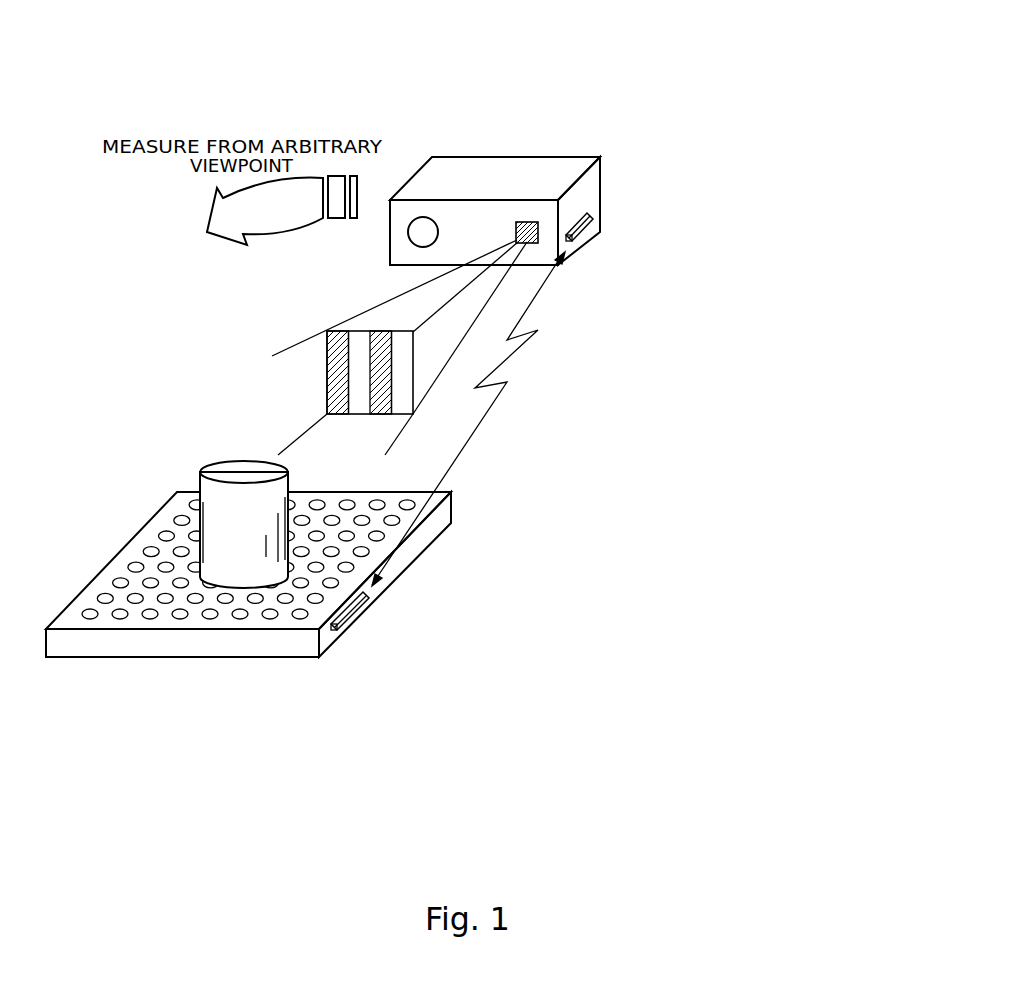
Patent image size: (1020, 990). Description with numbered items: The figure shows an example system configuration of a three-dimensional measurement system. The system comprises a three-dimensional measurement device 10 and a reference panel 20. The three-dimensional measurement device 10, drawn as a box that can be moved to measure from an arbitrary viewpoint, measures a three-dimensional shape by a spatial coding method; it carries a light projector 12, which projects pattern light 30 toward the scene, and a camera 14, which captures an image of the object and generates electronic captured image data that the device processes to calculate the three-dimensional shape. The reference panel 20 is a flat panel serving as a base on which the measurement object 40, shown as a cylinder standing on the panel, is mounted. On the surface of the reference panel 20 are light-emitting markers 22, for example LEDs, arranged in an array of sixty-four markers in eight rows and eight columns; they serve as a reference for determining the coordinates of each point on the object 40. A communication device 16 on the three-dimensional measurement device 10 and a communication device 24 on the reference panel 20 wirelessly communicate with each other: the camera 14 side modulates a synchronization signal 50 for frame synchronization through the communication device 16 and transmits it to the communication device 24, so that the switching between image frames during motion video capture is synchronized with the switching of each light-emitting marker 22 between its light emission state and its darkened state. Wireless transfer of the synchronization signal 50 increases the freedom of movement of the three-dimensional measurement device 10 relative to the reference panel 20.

The three-dimensional measurement device 10 is at (597, 188).
The light projector 12 is at (527, 222).
The camera 14 is at (423, 230).
The communication device 16 is at (595, 232).
The reference panel 20 is at (265, 640).
The light-emitting marker 22 is at (90, 614).
The communication device 24 is at (370, 602).
The pattern light 30 is at (407, 303).
The measurement object 40 is at (224, 495).
The synchronization signal 50 is at (540, 312).